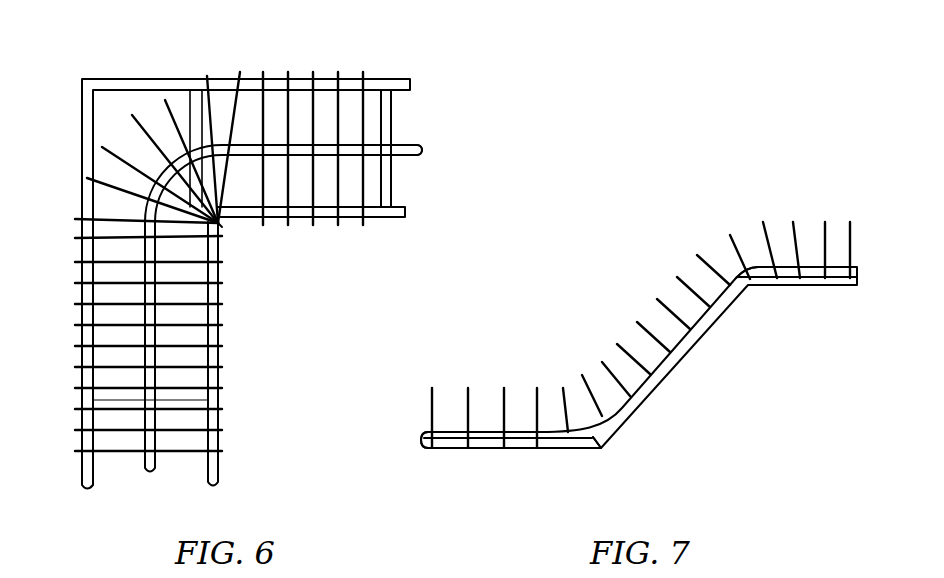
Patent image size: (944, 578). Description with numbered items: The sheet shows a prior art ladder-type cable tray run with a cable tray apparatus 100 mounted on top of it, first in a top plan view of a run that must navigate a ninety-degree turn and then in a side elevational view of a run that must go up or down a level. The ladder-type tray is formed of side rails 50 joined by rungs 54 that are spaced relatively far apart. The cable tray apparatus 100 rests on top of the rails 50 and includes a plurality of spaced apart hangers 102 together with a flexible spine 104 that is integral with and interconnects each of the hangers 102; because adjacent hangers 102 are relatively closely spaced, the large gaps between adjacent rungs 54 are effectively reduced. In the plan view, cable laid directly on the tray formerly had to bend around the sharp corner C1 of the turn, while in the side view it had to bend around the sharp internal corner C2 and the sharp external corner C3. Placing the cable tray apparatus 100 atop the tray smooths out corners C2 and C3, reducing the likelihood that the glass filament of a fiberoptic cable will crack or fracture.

In FIG. 6, the rails 50 is at (82, 150).
In FIG. 7, the rails 50 is at (487, 450).
In FIG. 6, the rungs 54 is at (203, 100).
In FIG. 6, the cable tray apparatus 100 is at (410, 163).
In FIG. 7, the cable tray apparatus 100 is at (742, 212).
In FIG. 6, the hangers 102 is at (352, 46).
In FIG. 7, the hangers 102 is at (504, 395).
In FIG. 6, the flexible spine 104 is at (420, 140).
In FIG. 7, the flexible spine 104 is at (440, 430).
In FIG. 6, the corner C1 is at (225, 236).
In FIG. 7, the internal corner C2 is at (618, 447).
In FIG. 7, the external corner C3 is at (744, 296).